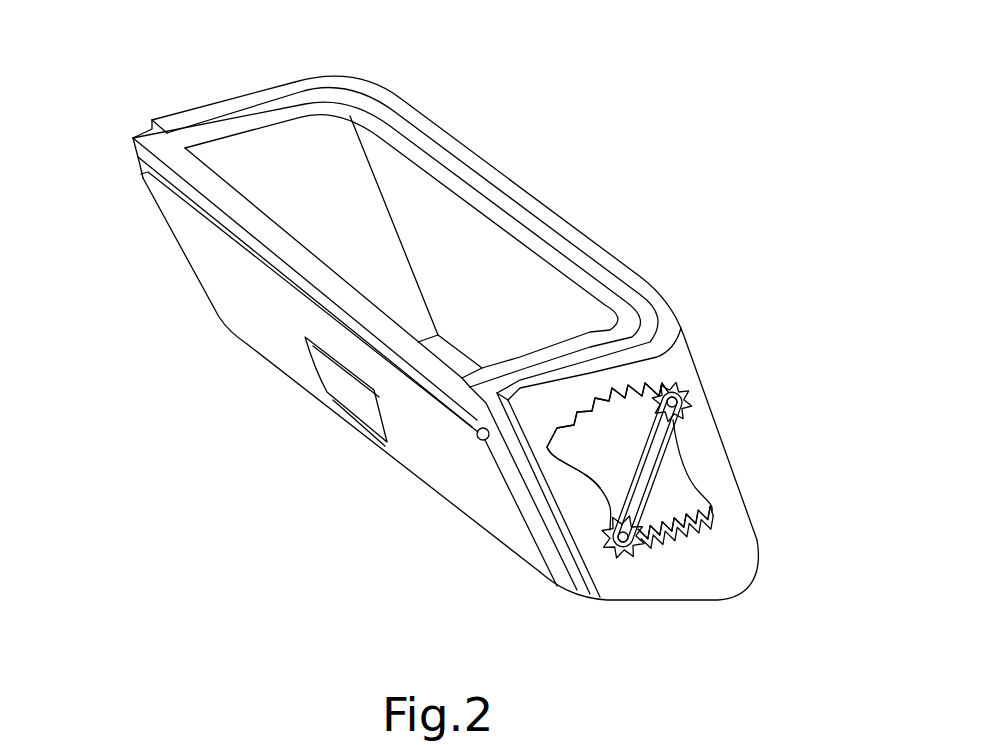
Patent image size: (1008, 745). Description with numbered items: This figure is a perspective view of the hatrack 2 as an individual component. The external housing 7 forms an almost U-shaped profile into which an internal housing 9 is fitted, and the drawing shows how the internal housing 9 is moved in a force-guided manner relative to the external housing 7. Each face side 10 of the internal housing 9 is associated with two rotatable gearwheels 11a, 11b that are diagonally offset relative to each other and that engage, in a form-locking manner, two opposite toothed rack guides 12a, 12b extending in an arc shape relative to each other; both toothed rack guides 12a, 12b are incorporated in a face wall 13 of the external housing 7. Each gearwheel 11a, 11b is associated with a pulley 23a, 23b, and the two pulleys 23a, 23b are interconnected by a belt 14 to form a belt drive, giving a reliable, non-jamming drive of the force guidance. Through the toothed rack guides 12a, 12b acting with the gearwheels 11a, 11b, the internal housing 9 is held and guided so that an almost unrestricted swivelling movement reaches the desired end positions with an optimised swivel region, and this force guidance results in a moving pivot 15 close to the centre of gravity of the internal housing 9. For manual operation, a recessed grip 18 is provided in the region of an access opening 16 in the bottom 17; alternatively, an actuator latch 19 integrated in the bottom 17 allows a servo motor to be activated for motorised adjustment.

The hatrack 2 is at (208, 95).
The external housing 7 is at (477, 167).
The internal housing 9 is at (175, 158).
The face side 10 is at (673, 502).
The gearwheel 11a is at (617, 556).
The gearwheel 11b is at (657, 385).
The toothed rack guide 12a is at (683, 517).
The toothed rack guide 12b is at (607, 461).
The face wall 13 is at (705, 563).
The belt 14 is at (663, 467).
The moving pivot 15 is at (560, 435).
The access opening 16 is at (525, 270).
The bottom 17 is at (258, 320).
The recessed grip 18 is at (213, 227).
The actuator latch 19 is at (357, 390).
The pulley 23a is at (630, 552).
The pulley 23b is at (697, 403).